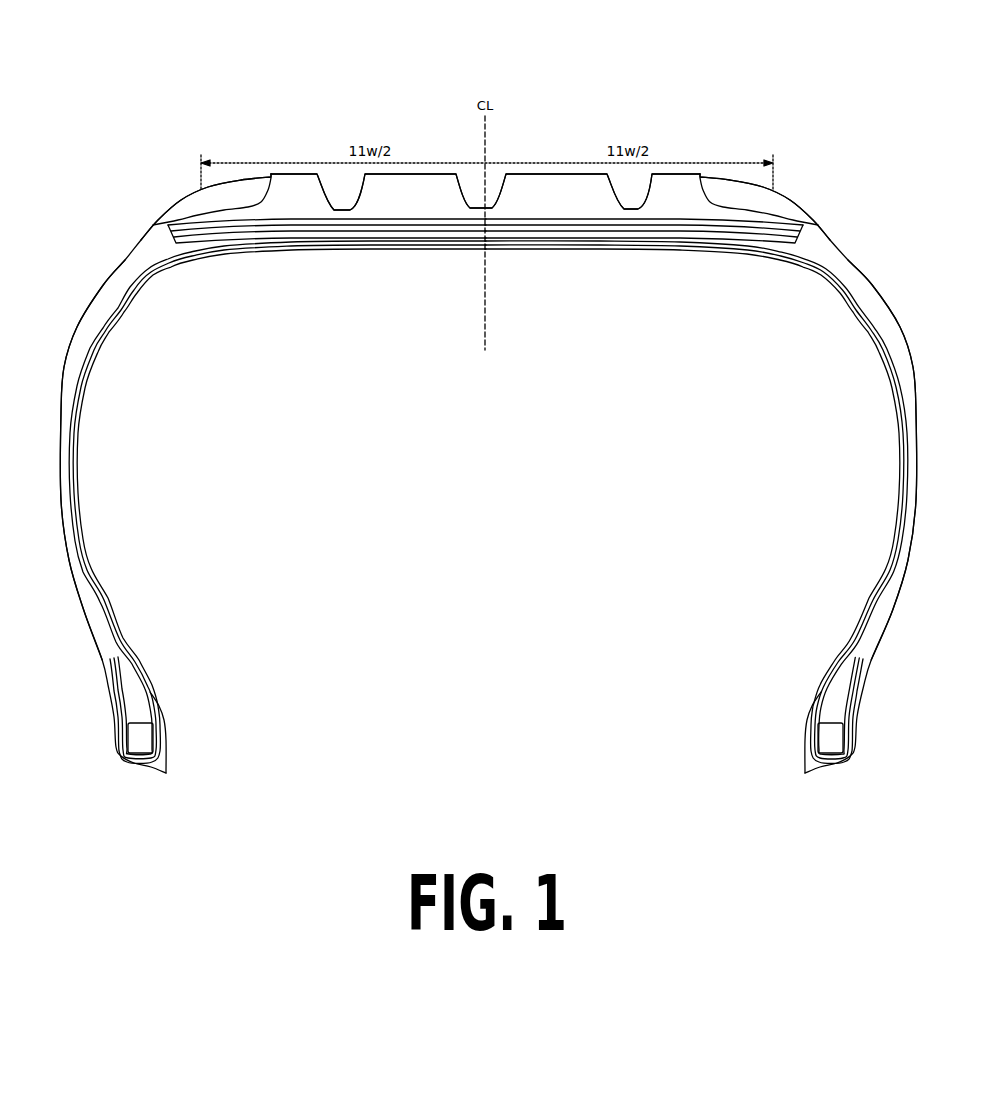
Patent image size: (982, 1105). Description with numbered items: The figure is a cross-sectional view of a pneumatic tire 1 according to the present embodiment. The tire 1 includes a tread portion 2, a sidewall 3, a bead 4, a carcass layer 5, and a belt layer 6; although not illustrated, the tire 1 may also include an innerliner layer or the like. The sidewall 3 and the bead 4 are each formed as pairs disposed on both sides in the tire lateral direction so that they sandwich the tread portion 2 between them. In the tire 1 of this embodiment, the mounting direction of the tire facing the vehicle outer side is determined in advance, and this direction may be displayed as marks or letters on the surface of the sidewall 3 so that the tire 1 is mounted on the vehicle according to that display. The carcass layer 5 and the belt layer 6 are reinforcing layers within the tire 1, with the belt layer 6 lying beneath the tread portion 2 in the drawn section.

The pneumatic tire 1 is at (791, 83).
The tread portion 2 is at (171, 195).
The sidewall 3 is at (60, 470).
The bead 4 is at (128, 740).
The carcass layer 5 is at (72, 413).
The belt layer 6 is at (181, 236).